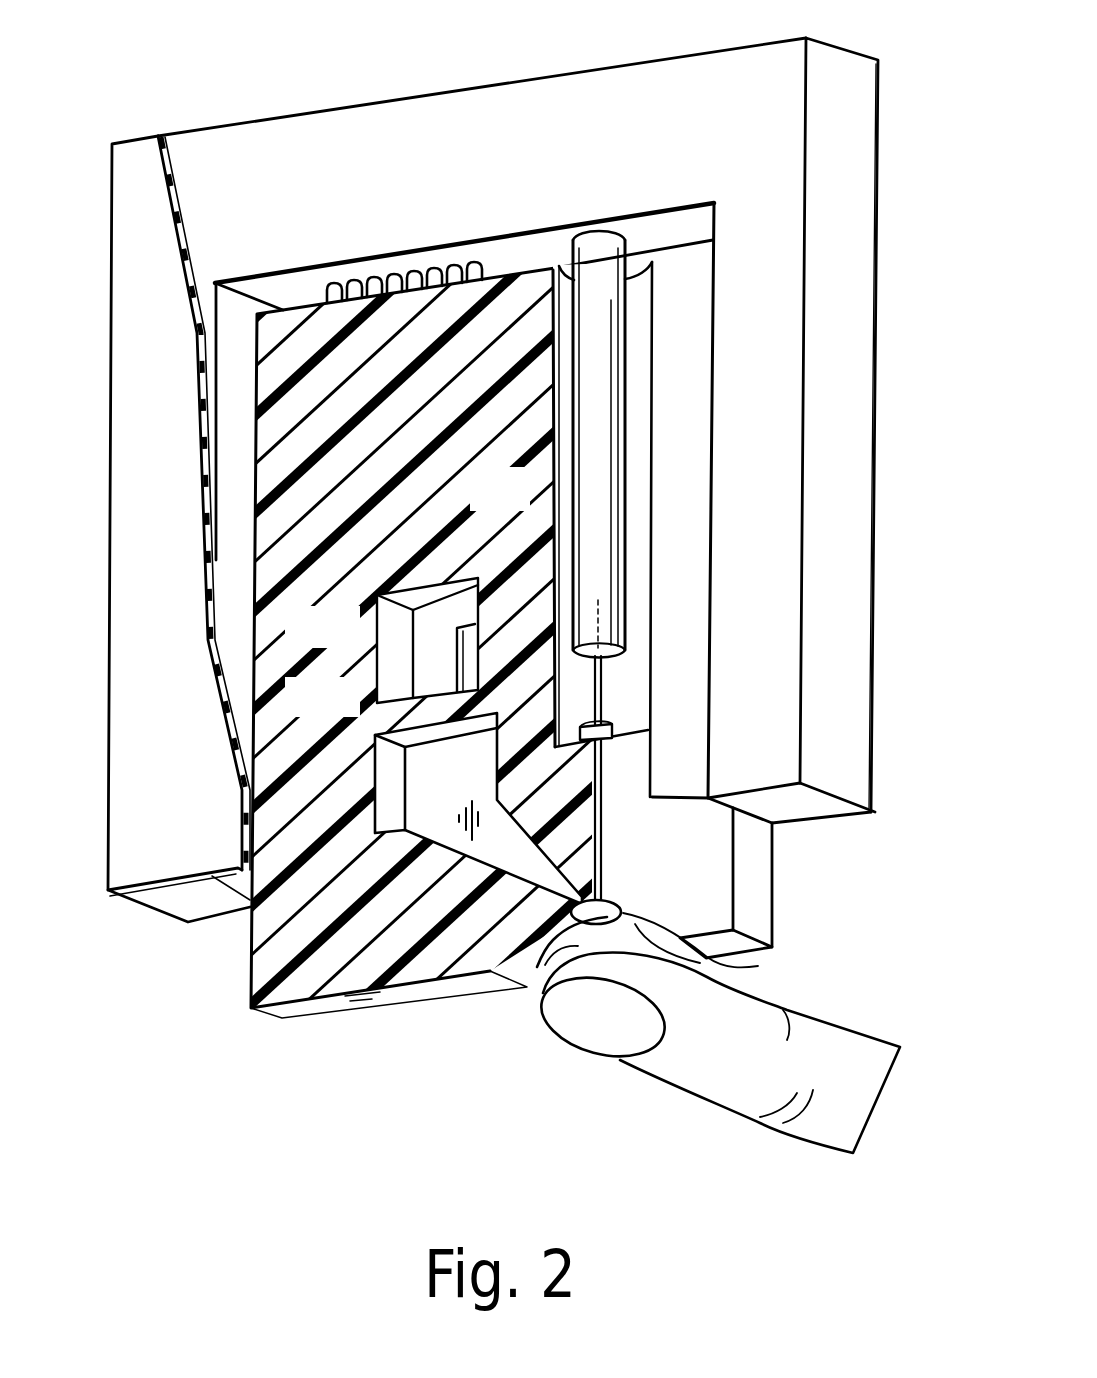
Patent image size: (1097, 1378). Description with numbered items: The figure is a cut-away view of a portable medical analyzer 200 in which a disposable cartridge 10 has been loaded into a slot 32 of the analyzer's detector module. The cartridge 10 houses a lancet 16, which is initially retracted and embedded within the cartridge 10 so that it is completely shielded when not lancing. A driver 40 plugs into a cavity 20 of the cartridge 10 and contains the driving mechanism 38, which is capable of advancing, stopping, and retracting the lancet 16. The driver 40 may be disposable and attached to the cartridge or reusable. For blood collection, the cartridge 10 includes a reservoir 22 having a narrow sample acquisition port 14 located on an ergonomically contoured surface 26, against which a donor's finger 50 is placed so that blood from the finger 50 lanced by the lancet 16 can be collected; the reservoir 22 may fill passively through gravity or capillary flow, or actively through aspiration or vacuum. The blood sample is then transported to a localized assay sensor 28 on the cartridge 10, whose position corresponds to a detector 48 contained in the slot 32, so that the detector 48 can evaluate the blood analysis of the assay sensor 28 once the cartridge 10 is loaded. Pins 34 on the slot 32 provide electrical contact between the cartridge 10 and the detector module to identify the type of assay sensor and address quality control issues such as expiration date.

The portable medical analyzer 200 is at (376, 31).
The cartridge 10 is at (287, 1015).
The sample acquisition port 14 is at (537, 967).
The lancet 16 is at (602, 688).
The cavity 20 is at (640, 463).
The reservoir 22 is at (428, 808).
The ergonomically contoured surface 26 is at (758, 966).
The assay sensor 28 is at (397, 613).
The slot 32 is at (797, 808).
The pins 34 is at (366, 288).
The driving mechanism 38 is at (573, 477).
The driver 40 is at (617, 658).
The detector 48 is at (457, 672).
The finger 50 is at (603, 963).